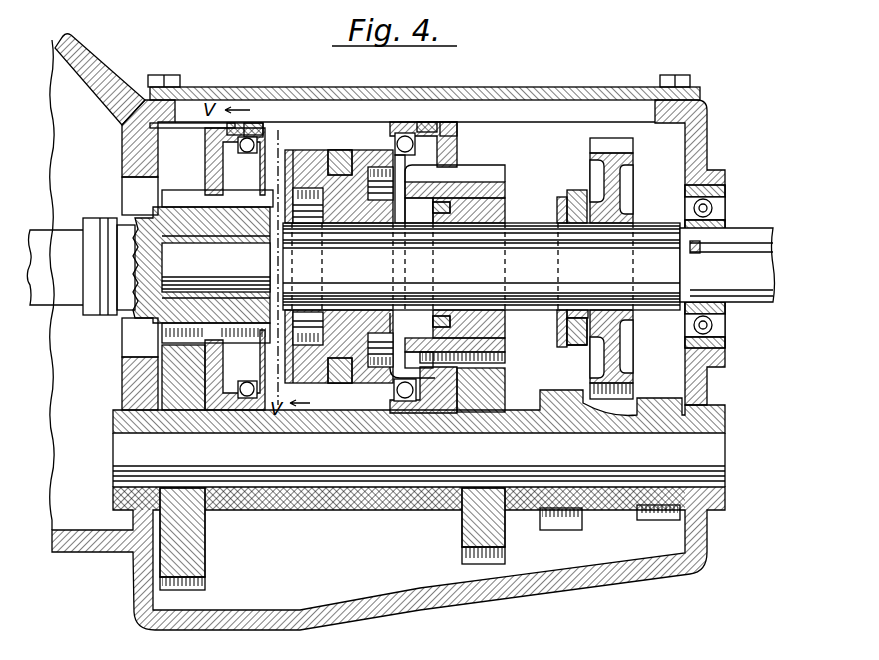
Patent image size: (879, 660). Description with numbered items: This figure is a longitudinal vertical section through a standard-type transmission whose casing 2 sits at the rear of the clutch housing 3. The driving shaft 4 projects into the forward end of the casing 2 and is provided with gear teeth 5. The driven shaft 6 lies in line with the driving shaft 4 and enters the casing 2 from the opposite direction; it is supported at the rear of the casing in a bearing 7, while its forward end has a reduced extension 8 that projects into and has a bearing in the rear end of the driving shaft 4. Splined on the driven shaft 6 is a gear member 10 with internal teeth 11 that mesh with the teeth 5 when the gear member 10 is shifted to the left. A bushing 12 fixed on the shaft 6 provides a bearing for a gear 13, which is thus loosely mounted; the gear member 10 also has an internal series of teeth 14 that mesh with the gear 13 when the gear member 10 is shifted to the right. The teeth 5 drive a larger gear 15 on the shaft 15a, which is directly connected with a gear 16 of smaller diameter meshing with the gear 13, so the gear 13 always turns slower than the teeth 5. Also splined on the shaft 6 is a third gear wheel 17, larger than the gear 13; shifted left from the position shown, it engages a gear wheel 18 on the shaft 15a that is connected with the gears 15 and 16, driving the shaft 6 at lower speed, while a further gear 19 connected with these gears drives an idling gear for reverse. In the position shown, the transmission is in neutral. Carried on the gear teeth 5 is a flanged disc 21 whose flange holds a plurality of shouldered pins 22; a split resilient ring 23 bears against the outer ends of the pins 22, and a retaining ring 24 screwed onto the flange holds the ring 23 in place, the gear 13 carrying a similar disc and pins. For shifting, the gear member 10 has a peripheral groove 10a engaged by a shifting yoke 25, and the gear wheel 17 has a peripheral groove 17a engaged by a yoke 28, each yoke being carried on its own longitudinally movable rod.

The casing 2 is at (710, 108).
The clutch housing 3 is at (92, 70).
The driving shaft 4 is at (102, 325).
The gear teeth 5 is at (179, 196).
The driven shaft 6 is at (529, 266).
The bearing 7 is at (727, 222).
The reduced extension 8 is at (201, 265).
The gear member 10 is at (318, 380).
The peripheral groove 10a is at (343, 384).
The internal teeth 11 is at (304, 190).
The bushing 12 is at (505, 212).
The gear 13 is at (497, 172).
The internal series of teeth 14 is at (380, 172).
The larger gear 15 is at (206, 551).
The shaft 15a is at (419, 435).
The gear of smaller diameter 16 is at (460, 536).
The third gear wheel 17 is at (626, 164).
The peripheral groove 17a is at (567, 332).
The gear wheel 18 is at (566, 525).
The gear 19 is at (663, 517).
The flanged disc 21 is at (206, 152).
The shouldered pins 22 is at (250, 153).
The split resilient ring 23 is at (256, 128).
The retaining ring 24 is at (248, 125).
The shifting yoke 25 is at (338, 153).
The yoke 28 is at (567, 347).